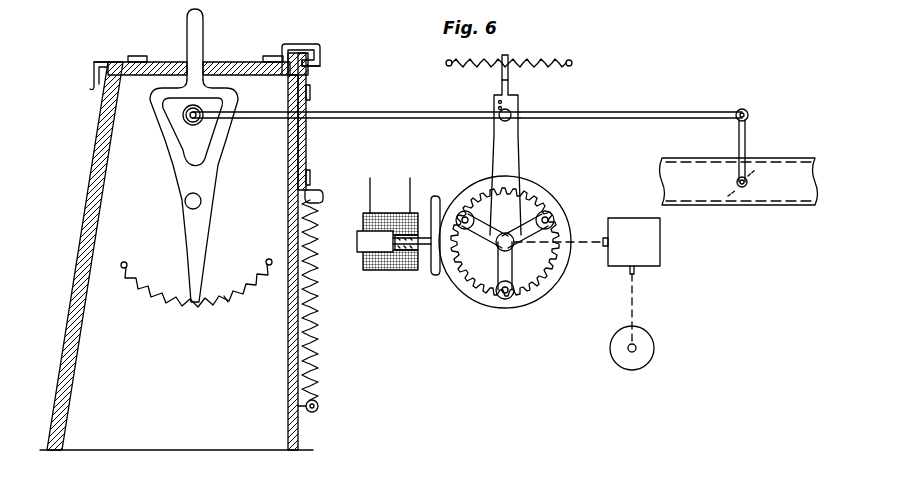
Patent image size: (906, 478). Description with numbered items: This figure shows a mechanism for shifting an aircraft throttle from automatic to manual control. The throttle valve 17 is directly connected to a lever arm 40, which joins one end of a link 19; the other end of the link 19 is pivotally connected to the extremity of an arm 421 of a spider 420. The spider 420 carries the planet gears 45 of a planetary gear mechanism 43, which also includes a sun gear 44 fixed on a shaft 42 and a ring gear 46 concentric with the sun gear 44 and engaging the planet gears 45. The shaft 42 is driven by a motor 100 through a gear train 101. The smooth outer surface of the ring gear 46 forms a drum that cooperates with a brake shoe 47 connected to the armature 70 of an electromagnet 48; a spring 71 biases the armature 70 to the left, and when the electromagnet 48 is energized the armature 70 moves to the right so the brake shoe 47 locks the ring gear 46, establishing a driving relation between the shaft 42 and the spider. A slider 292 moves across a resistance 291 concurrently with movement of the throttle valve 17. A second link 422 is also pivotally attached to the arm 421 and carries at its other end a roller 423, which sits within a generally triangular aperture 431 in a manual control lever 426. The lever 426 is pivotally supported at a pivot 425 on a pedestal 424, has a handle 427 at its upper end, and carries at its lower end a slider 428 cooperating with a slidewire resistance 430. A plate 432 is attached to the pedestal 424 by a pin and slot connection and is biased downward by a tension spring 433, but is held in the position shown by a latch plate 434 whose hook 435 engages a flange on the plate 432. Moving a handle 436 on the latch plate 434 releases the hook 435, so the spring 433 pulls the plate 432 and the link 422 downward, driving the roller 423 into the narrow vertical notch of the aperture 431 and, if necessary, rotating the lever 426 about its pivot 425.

The throttle valve 17 is at (738, 207).
The link 19 is at (641, 111).
The lever arm 40 is at (752, 136).
The shaft 42 is at (519, 250).
The planetary gear mechanism 43 is at (567, 297).
The sun gear 44 is at (528, 262).
The planet gears 45 is at (470, 210).
The ring gear 46 is at (574, 228).
The brake shoe 47 is at (433, 214).
The electromagnet 48 is at (381, 268).
The armature 70 is at (357, 240).
The spring 71 is at (409, 262).
The motor 100 is at (667, 339).
The gear train 101 is at (661, 263).
The resistance 291 is at (549, 62).
The slider 292 is at (510, 90).
The spider 420 is at (498, 272).
The arm 421 is at (512, 152).
The link 422 is at (411, 111).
The roller 423 is at (204, 122).
The pedestal 424 is at (100, 168).
The pivot 425 is at (203, 203).
The manual control lever 426 is at (214, 166).
The handle 427 is at (201, 24).
The slider 428 is at (203, 280).
The slidewire resistance 430 is at (241, 309).
The triangular aperture 431 is at (172, 126).
The plate 432 is at (306, 154).
The tension spring 433 is at (321, 339).
The latch plate 434 is at (292, 44).
The hook 435 is at (321, 63).
The handle 436 is at (92, 68).